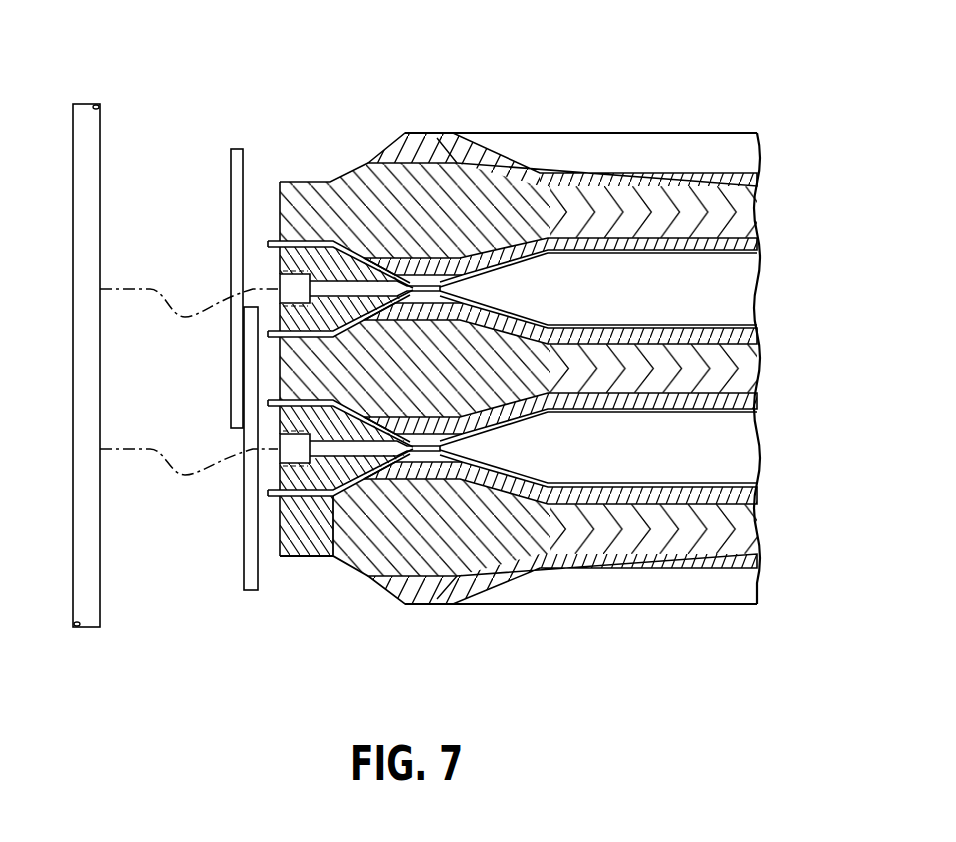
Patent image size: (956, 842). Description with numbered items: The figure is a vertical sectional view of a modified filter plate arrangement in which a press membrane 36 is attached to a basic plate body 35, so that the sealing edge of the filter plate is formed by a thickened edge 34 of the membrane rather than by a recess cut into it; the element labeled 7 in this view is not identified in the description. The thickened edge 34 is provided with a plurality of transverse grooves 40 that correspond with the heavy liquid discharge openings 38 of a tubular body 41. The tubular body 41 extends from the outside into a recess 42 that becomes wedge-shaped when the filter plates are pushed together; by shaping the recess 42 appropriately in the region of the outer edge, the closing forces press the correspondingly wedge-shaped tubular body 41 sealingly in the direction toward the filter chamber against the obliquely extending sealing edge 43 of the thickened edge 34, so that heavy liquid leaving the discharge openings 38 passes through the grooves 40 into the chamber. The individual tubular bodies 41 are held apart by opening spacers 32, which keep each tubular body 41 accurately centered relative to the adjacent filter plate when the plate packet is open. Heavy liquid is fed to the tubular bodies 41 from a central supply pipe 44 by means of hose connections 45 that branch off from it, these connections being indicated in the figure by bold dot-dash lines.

The central supply pipe 44 is at (93, 163).
The opening spacers 32 is at (233, 222).
The hose connections 45 is at (144, 450).
The sealing edge 43 is at (379, 153).
The transverse grooves 40 is at (423, 140).
The thickened edge 34 is at (446, 142).
The press membrane 36 is at (731, 178).
The basic plate body 35 is at (737, 212).
The extrusion channel 7 is at (724, 413).
The tubular body 41 is at (307, 477).
The heavy liquid discharge openings 38 is at (342, 452).
The recess 42 is at (367, 515).